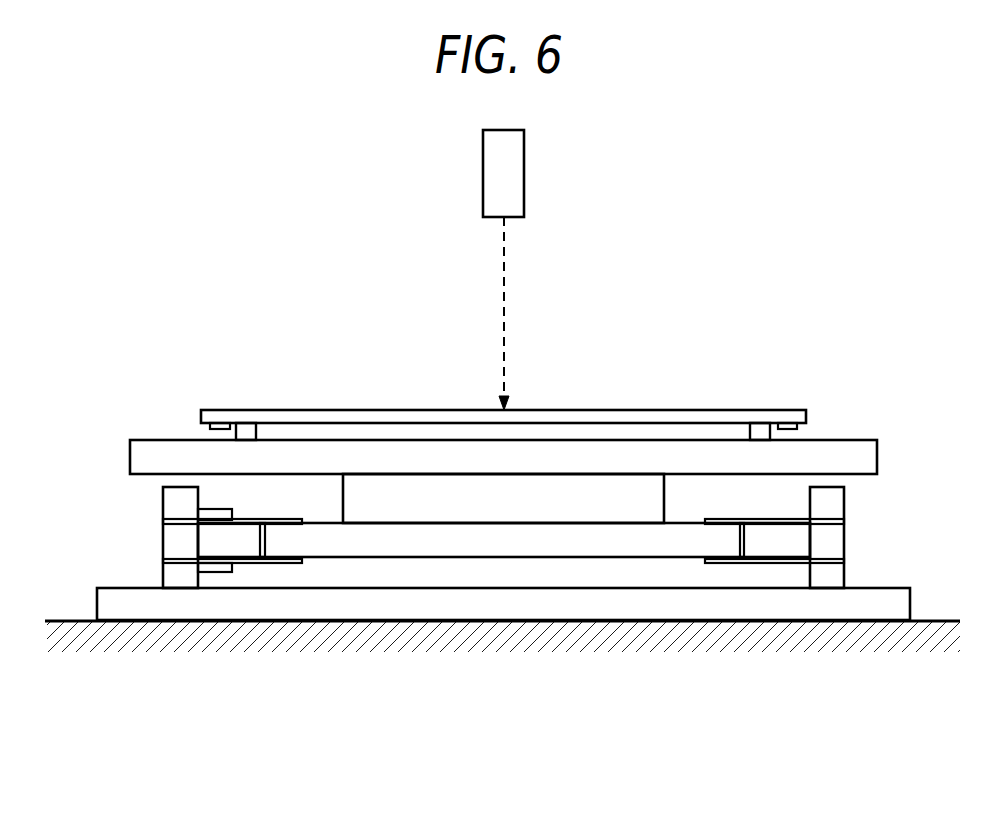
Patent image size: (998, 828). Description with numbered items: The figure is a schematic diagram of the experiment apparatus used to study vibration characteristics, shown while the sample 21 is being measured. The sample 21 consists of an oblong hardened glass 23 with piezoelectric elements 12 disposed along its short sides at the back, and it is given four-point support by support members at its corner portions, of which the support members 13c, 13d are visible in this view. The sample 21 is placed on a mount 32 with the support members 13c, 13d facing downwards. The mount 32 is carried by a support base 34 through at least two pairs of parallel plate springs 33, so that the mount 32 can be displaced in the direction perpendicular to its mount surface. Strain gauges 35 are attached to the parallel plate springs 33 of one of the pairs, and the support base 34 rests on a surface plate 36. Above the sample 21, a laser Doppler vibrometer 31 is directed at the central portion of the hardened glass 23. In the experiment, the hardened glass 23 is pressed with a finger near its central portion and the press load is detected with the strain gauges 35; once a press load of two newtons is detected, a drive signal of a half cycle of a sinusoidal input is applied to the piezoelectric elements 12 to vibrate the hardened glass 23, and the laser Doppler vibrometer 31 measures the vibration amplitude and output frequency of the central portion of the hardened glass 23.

The piezoelectric element 12 is at (210, 432).
The support member 13c is at (246, 433).
The support member 13d is at (759, 433).
The sample 21 is at (503, 360).
The hardened glass 23 is at (391, 409).
The laser Doppler vibrometer 31 is at (492, 176).
The mount 32 is at (140, 457).
The parallel plate spring 33 is at (254, 524).
The support base 34 is at (495, 603).
The strain gauge 35 is at (233, 512).
The surface plate 36 is at (931, 620).